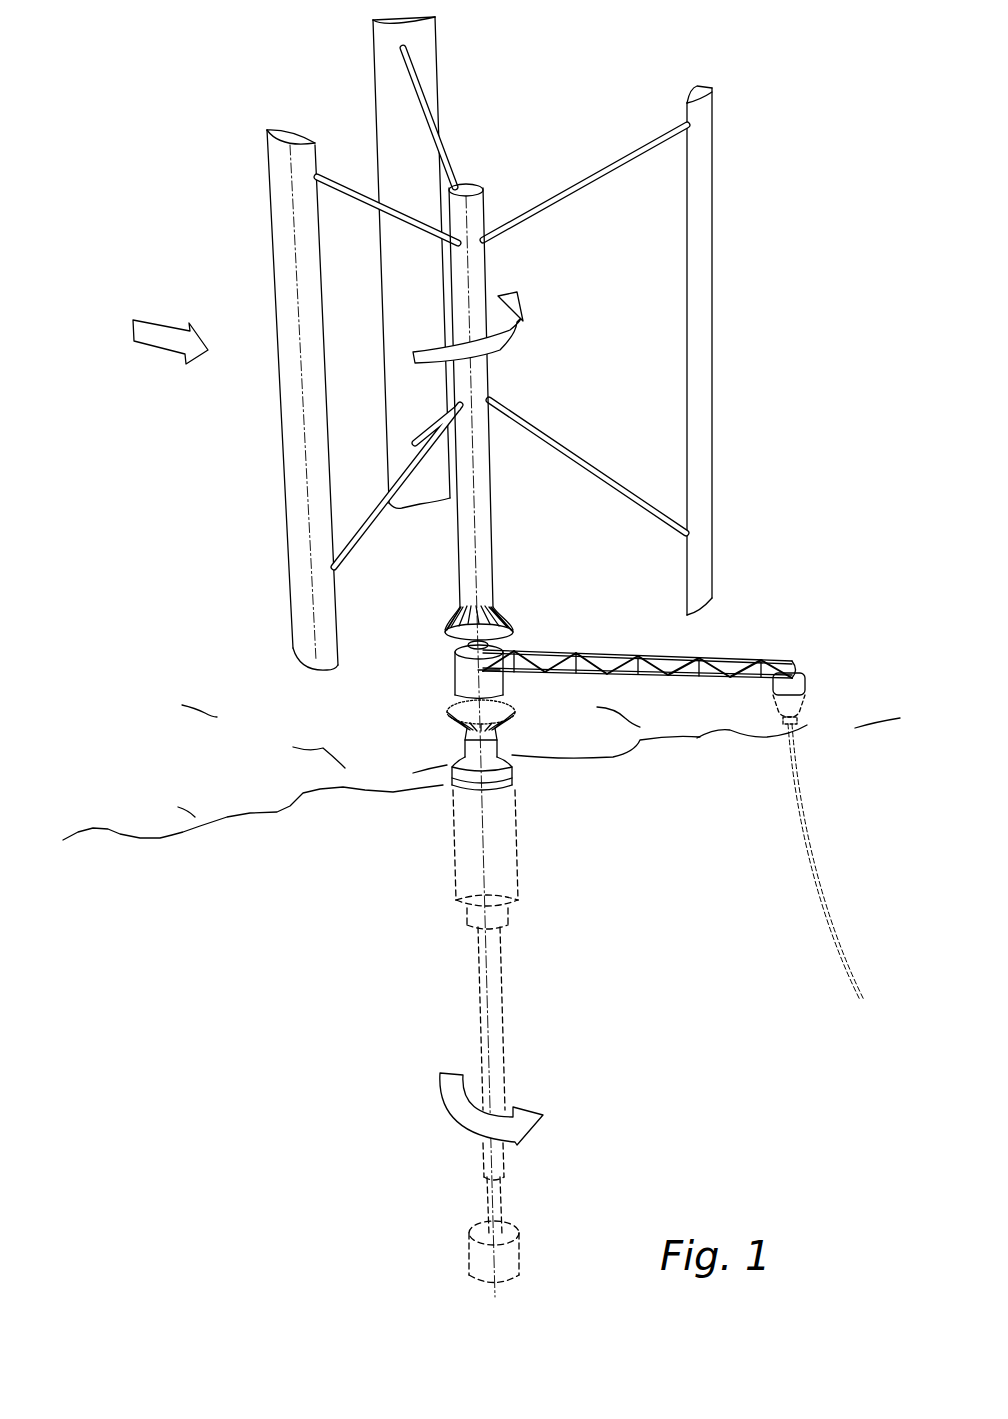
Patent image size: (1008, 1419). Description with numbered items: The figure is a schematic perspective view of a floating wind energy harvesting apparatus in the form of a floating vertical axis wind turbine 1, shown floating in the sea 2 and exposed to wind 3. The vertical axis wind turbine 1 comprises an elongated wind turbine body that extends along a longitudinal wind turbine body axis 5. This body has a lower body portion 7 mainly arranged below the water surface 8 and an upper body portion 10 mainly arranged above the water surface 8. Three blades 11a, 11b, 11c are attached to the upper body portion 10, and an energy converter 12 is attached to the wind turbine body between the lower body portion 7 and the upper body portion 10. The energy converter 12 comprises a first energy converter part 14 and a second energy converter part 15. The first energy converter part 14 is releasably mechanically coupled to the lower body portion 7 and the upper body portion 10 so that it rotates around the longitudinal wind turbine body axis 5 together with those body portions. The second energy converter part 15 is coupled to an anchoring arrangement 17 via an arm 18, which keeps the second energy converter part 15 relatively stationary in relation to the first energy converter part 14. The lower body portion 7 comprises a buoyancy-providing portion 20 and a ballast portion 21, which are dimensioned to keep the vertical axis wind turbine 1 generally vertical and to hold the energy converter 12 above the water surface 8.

The floating vertical axis wind turbine 1 is at (213, 608).
The sea 2 is at (258, 940).
The wind 3 is at (150, 340).
The longitudinal wind turbine body axis 5 is at (470, 263).
The lower body portion 7 is at (508, 1032).
The water surface 8 is at (303, 793).
The upper body portion 10 is at (472, 343).
The blade 11a is at (292, 480).
The blade 11b is at (387, 113).
The blade 11c is at (654, 350).
The energy converter 12 is at (540, 618).
The first energy converter part 14 is at (455, 700).
The second energy converter part 15 is at (497, 685).
The anchoring arrangement 17 is at (780, 640).
The arm 18 is at (597, 650).
The buoyancy-providing portion 20 is at (507, 862).
The ballast portion 21 is at (508, 1257).